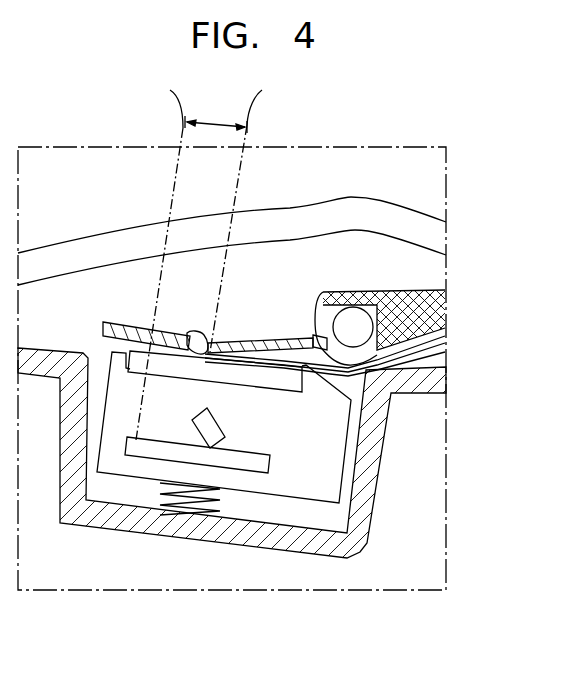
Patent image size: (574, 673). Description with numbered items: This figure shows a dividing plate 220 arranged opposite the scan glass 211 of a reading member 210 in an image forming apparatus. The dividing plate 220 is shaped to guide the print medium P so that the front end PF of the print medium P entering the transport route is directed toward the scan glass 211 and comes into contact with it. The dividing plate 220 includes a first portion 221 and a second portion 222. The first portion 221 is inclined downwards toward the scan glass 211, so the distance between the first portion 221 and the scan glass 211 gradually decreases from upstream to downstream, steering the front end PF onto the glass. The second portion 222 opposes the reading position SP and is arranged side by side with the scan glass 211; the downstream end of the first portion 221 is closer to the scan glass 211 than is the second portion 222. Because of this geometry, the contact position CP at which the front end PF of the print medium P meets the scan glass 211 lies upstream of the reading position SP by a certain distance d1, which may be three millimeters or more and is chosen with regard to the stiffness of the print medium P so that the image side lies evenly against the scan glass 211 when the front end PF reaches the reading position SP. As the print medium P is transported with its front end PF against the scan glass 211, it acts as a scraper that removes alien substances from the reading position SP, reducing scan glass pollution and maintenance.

The reading member 210 is at (317, 483).
The scan glass 211 is at (262, 376).
The dividing plate 220 is at (135, 75).
The first portion 221 is at (265, 343).
The second portion 222 is at (200, 417).
The print medium P is at (431, 350).
The front end of the print medium PF is at (188, 338).
The reading position SP is at (159, 253).
The contact position CP is at (245, 209).
The distance d1 is at (216, 114).